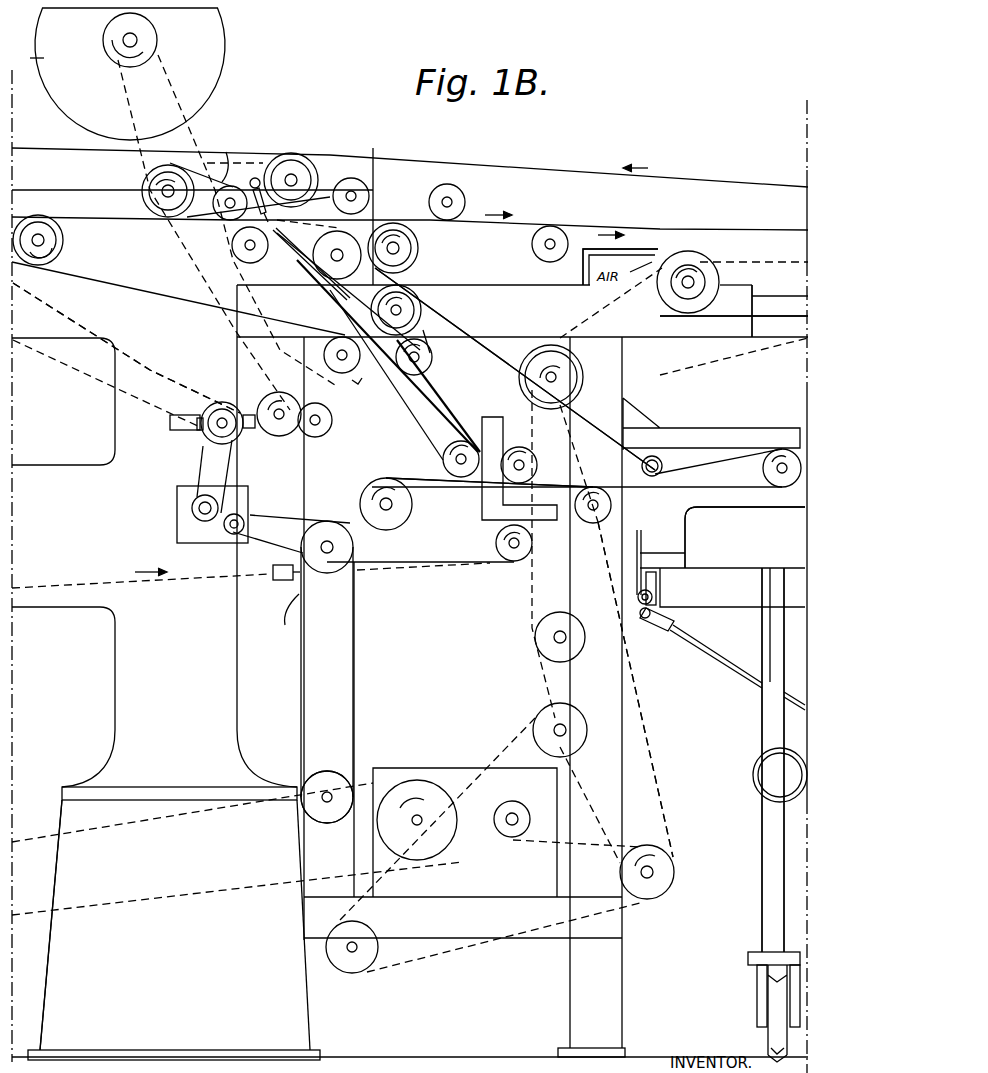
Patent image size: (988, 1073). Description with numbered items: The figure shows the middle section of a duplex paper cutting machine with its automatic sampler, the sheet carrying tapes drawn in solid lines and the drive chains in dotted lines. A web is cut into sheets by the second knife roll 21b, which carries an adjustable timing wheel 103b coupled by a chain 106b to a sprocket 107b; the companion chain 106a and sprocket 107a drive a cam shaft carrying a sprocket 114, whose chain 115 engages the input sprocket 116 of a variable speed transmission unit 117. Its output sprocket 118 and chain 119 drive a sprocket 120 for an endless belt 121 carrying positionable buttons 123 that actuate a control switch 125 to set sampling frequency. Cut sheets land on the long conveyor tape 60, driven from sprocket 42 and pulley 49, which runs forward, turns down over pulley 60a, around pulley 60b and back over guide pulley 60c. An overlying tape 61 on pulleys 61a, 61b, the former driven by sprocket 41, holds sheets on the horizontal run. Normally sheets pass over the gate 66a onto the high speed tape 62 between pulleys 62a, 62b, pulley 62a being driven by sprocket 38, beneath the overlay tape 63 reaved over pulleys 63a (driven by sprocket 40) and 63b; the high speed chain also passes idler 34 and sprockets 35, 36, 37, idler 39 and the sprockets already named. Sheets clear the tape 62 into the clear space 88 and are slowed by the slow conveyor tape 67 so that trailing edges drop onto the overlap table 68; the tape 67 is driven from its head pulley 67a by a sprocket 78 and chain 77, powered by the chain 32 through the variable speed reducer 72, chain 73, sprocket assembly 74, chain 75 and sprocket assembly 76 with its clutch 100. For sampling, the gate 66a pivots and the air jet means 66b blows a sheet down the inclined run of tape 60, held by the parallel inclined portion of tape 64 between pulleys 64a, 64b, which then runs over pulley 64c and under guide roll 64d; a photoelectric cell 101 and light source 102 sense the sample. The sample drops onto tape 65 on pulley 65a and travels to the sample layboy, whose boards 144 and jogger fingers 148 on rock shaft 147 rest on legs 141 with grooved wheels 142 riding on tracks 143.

The knife roll 21b is at (215, 52).
The adjustable timing wheel 103b is at (152, 40).
The chain 106b is at (210, 128).
The overlying tape 61 is at (217, 152).
The air jet means 66b is at (258, 176).
The sprocket 40 is at (312, 170).
The pulley 63a is at (330, 170).
The pulley 61a is at (158, 180).
The sprocket 41 is at (158, 193).
The pulley 49 is at (48, 232).
The sprocket 42 is at (50, 258).
The conveyor tape 60 is at (115, 222).
The pulley 61b is at (222, 212).
The pulley 60a is at (237, 250).
The idler 39 is at (362, 190).
The pulley 63b is at (455, 194).
The overlay tape 63 is at (572, 170).
The tape 62 is at (474, 230).
The pulley 62a is at (412, 240).
The sprocket 38 is at (405, 252).
The pulley 62b is at (533, 249).
The clear space 88 is at (668, 238).
The overlap table 68 is at (612, 256).
The main overlapping conveyor tape 67 is at (768, 248).
The pulley 67a is at (712, 277).
The sprocket 78 is at (680, 292).
The tape motivating chain 77 is at (604, 304).
The movable gate 66a is at (312, 275).
The guide pulley 60c is at (345, 340).
The pulley 64c is at (420, 300).
The sprocket 37 is at (413, 316).
The high speed tape 64 is at (455, 340).
The clutch 100 is at (535, 352).
The sprocket assembly 76 is at (568, 368).
The light source 102 is at (446, 348).
The pulley 64a is at (424, 368).
The photoelectric cell 101 is at (362, 384).
The sprocket 36 is at (332, 424).
The chain 106a is at (80, 322).
The sprocket 107a is at (210, 405).
The sprocket 114 is at (212, 432).
The chain 115 is at (198, 470).
The input sprocket 116 is at (192, 508).
The variable speed transmission unit 117 is at (183, 529).
The sprocket 107b is at (282, 436).
The sprocket 35 is at (380, 480).
The pulley 60b is at (445, 467).
The pulley 64b is at (530, 455).
The guide roll 64d is at (668, 445).
The tape 65 is at (430, 490).
The pulley 65a is at (604, 524).
The jogger fingers 148 is at (645, 530).
The transverse wooden boards 144 is at (660, 558).
The rock shaft 147 is at (655, 597).
The chain 119 is at (280, 520).
The output sprocket 118 is at (228, 532).
The sprocket 120 is at (355, 545).
The idler 34 is at (496, 543).
The control switch 125 is at (273, 575).
The buttons 123 is at (299, 660).
The endless belt 121 is at (304, 660).
The variable speed reducer 72 is at (452, 768).
The chain 73 is at (390, 870).
The chain 75 is at (655, 752).
The sprocket assembly 74 is at (665, 858).
The legs 141 is at (768, 888).
The grooved wheels 142 is at (775, 994).
The tracks 143 is at (768, 1050).
The chain 32 is at (160, 826).